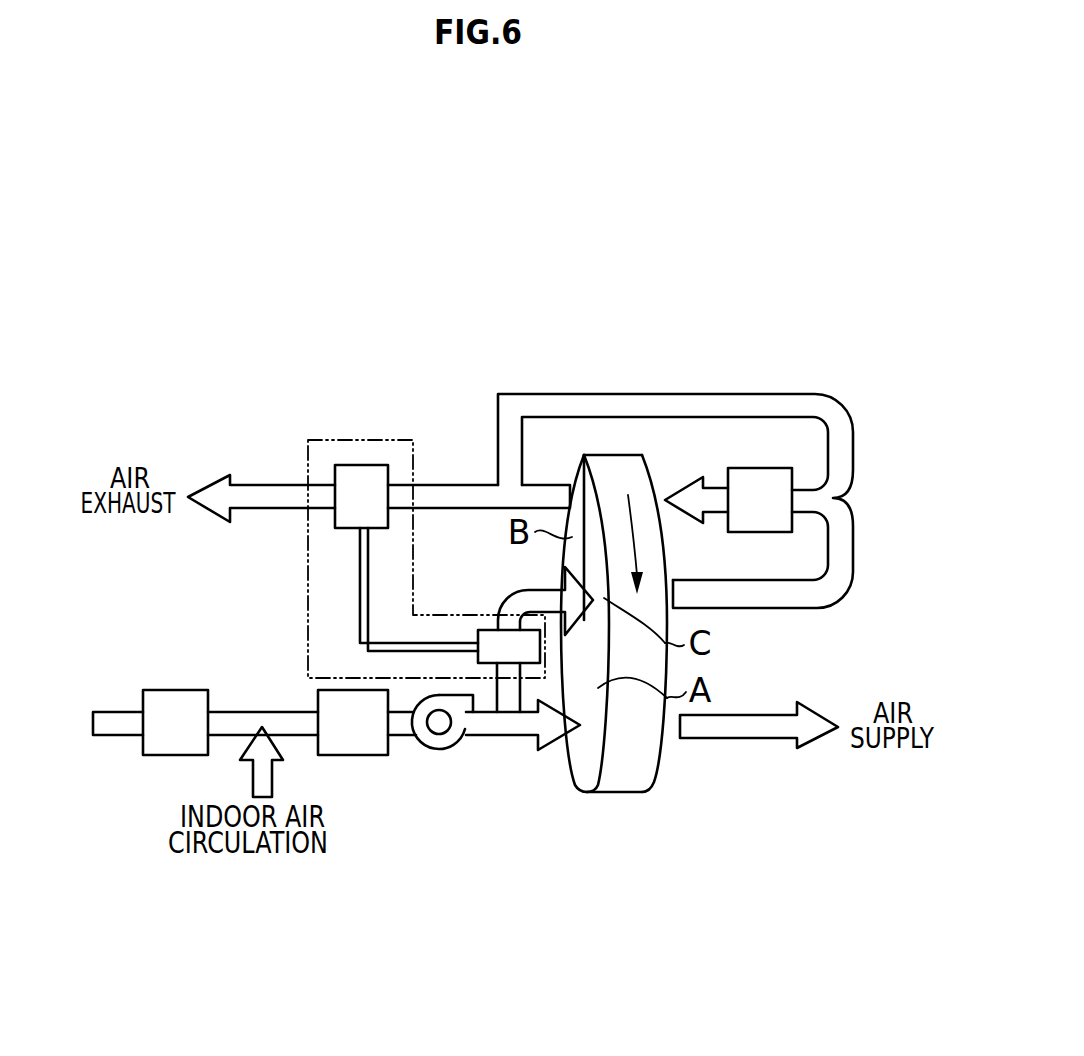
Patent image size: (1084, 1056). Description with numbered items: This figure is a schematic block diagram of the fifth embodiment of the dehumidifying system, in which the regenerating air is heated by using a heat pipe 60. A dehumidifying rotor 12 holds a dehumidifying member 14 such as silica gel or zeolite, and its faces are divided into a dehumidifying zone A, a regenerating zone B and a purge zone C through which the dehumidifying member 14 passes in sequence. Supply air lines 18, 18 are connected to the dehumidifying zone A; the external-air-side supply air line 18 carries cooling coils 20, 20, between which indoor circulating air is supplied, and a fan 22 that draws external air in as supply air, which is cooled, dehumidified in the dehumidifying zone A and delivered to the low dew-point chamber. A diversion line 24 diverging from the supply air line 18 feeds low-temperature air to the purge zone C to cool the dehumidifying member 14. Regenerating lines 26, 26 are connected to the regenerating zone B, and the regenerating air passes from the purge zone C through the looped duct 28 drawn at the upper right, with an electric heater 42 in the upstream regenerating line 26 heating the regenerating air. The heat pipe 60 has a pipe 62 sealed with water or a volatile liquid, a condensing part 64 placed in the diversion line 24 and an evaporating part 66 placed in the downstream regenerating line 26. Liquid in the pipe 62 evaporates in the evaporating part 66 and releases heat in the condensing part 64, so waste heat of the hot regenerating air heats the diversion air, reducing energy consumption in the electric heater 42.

The dehumidifying rotor 12 is at (613, 796).
The dehumidifying member 14 is at (580, 763).
The supply air line 18 is at (262, 720).
The cooling coil 20 is at (160, 745).
The fan 22 is at (442, 740).
The diversion line 24 is at (500, 698).
The regenerating line 26 is at (452, 493).
The regeneration duct 28 is at (607, 403).
The electric heater 42 is at (762, 477).
The heat pipe 60 is at (402, 440).
The pipe 62 is at (360, 583).
The condensing part 64 is at (490, 635).
The evaporating part 66 is at (347, 468).